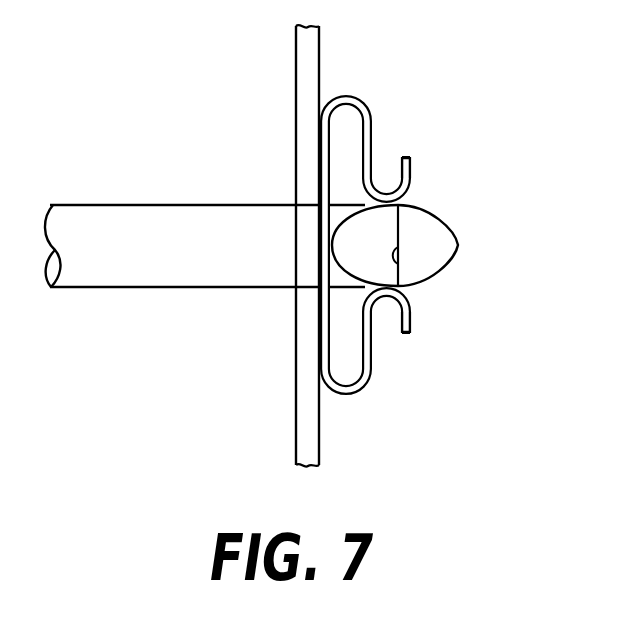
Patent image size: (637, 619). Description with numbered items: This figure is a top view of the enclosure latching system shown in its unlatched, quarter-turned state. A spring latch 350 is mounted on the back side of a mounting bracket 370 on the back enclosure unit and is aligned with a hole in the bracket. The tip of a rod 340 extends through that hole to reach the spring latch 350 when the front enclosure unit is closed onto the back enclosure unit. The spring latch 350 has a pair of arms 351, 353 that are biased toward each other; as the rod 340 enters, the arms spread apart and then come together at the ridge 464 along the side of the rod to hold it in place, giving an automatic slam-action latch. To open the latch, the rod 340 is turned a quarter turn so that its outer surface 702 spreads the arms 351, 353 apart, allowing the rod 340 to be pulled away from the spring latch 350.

The rod 340 is at (148, 269).
The spring latch 350 is at (346, 94).
The arm 351 is at (407, 155).
The lower clip end 353 is at (406, 334).
The mounting bracket 370 is at (296, 118).
The outer surface 702 is at (393, 206).
The ridge 464 is at (398, 278).